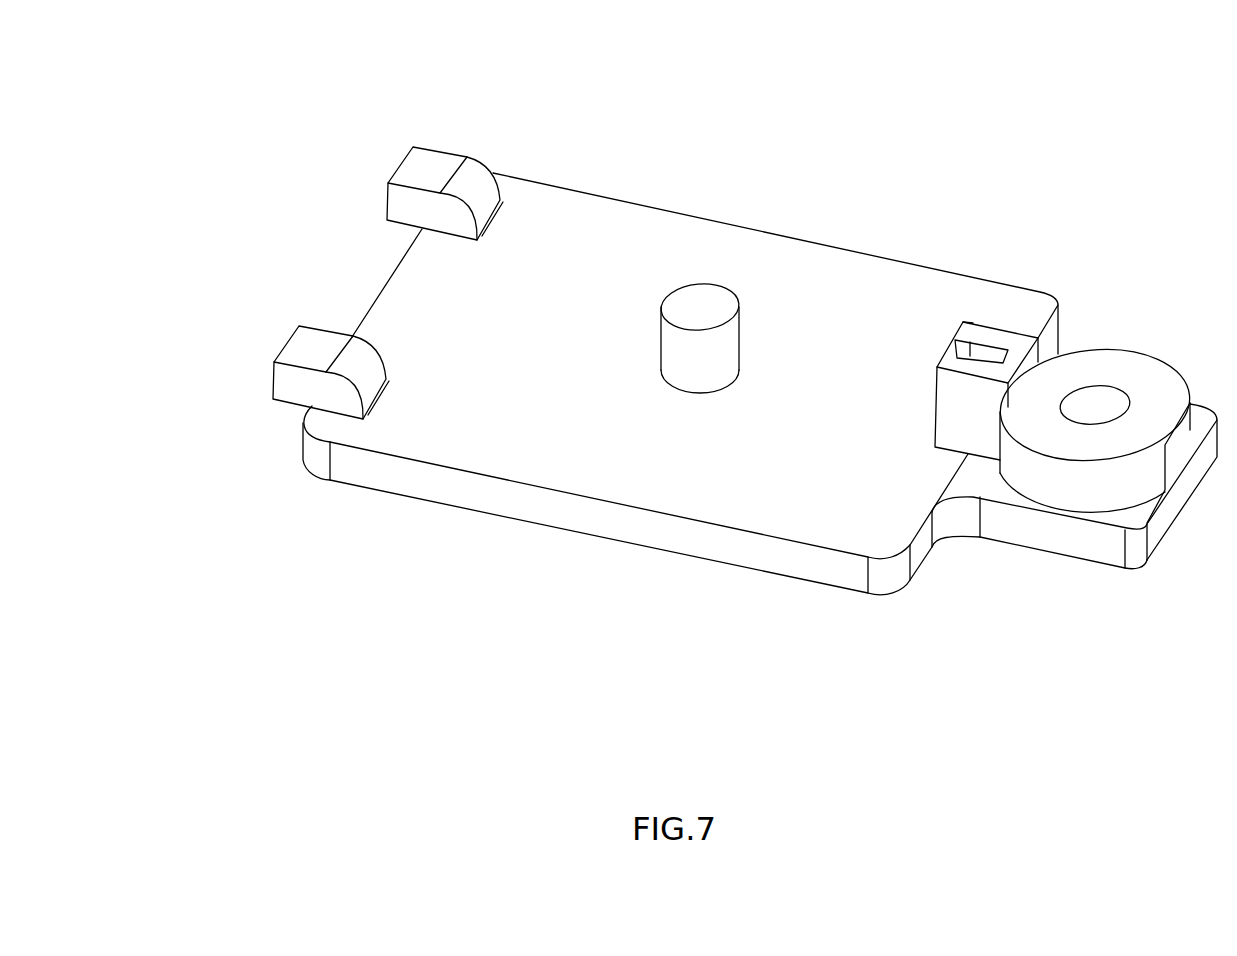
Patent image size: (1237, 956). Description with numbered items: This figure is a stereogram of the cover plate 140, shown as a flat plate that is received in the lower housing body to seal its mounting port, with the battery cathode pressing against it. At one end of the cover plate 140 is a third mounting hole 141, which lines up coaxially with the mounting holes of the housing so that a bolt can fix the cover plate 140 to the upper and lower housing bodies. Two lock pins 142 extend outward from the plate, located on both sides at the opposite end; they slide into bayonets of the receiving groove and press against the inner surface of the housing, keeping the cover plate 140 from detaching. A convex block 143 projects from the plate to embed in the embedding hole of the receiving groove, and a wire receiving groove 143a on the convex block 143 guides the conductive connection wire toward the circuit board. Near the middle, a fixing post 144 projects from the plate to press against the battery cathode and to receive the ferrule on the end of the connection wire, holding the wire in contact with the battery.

The cover plate 140 is at (582, 445).
The third mounting hole 141 is at (1095, 400).
The lock pin 142 is at (423, 180).
The convex block 143 is at (967, 415).
The wire receiving groove 143a is at (972, 350).
The fixing post 144 is at (702, 310).